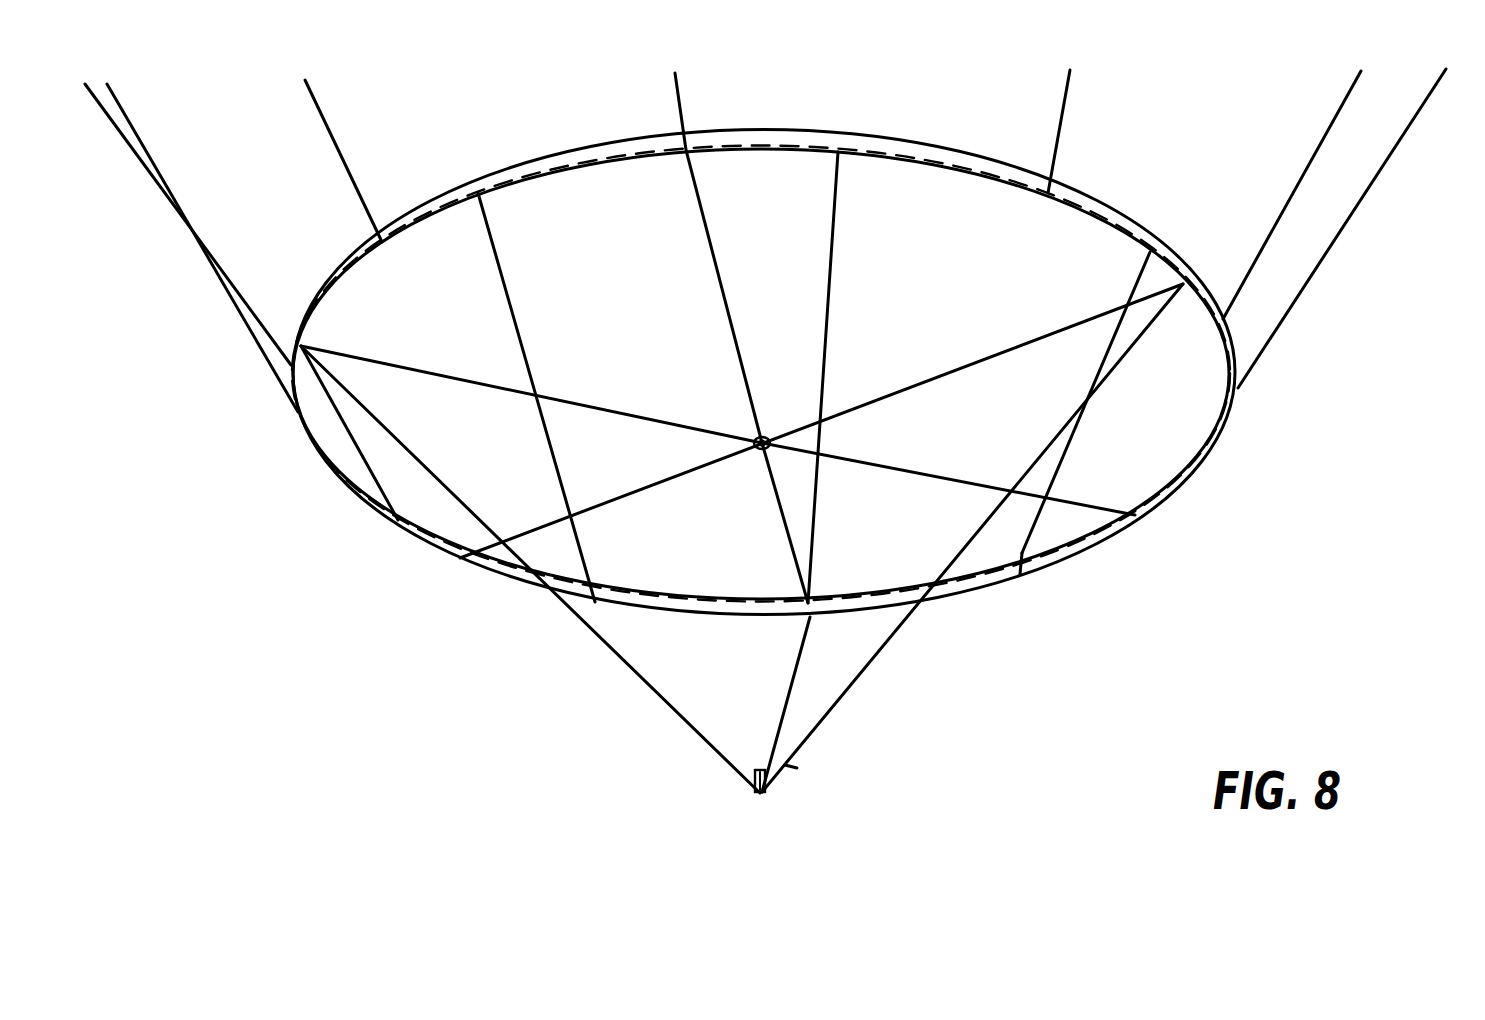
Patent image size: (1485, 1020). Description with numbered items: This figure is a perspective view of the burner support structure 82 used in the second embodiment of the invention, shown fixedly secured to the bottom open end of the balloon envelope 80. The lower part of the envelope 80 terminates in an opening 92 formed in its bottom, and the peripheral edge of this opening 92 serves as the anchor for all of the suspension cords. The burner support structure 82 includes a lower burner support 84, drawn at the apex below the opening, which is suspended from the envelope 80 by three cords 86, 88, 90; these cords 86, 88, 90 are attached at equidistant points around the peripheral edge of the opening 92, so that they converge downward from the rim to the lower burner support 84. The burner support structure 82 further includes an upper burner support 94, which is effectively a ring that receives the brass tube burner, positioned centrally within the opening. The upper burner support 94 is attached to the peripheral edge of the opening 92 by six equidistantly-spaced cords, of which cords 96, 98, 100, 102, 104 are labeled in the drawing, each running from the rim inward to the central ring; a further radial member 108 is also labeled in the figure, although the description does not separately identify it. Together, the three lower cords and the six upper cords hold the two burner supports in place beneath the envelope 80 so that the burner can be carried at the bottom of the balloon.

The balloon envelope 80 is at (1300, 301).
The burner support structure 82 is at (742, 552).
The lower burner support 84 is at (770, 785).
The cord 86 is at (670, 707).
The cord 88 is at (800, 673).
The cord 90 is at (843, 698).
The opening 92 is at (1193, 480).
The upper burner support 94 is at (752, 457).
The cord 96 is at (707, 247).
The cord 98 is at (987, 357).
The cord 100 is at (930, 474).
The cord 102 is at (797, 565).
The cord 104 is at (546, 527).
The radial member 108 is at (614, 412).